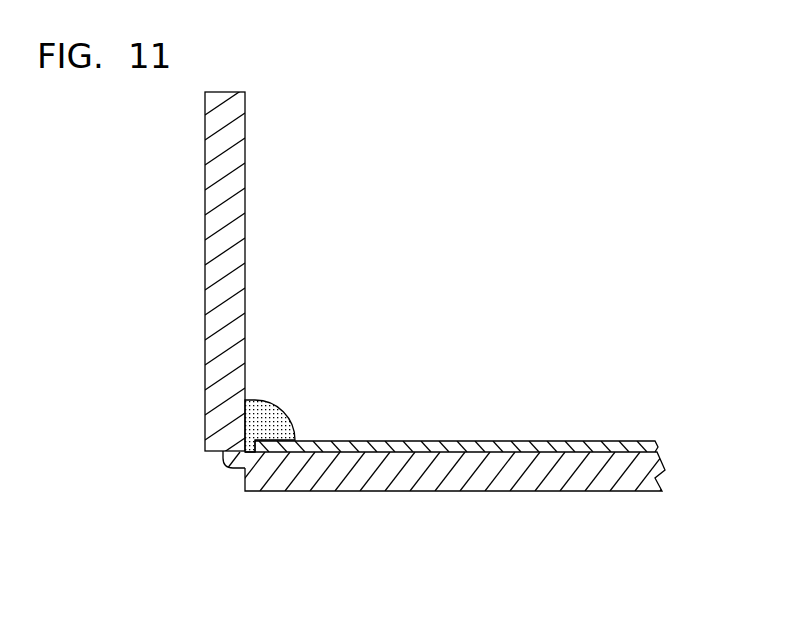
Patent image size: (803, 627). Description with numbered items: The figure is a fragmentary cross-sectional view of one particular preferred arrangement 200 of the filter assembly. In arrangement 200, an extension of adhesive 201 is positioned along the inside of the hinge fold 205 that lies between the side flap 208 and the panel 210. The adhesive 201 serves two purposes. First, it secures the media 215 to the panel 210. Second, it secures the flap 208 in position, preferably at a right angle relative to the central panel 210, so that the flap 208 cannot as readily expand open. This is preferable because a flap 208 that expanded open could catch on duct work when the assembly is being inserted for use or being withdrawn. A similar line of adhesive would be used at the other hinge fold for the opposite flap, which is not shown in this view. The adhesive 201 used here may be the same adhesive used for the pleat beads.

The welded joint assembly 200 is at (408, 257).
The weld bead 201 is at (273, 410).
The lip / flange of plate 205 is at (228, 467).
The vertical plate member 208 is at (245, 167).
The base plate 210 is at (492, 492).
The thin coating layer 215 is at (472, 442).